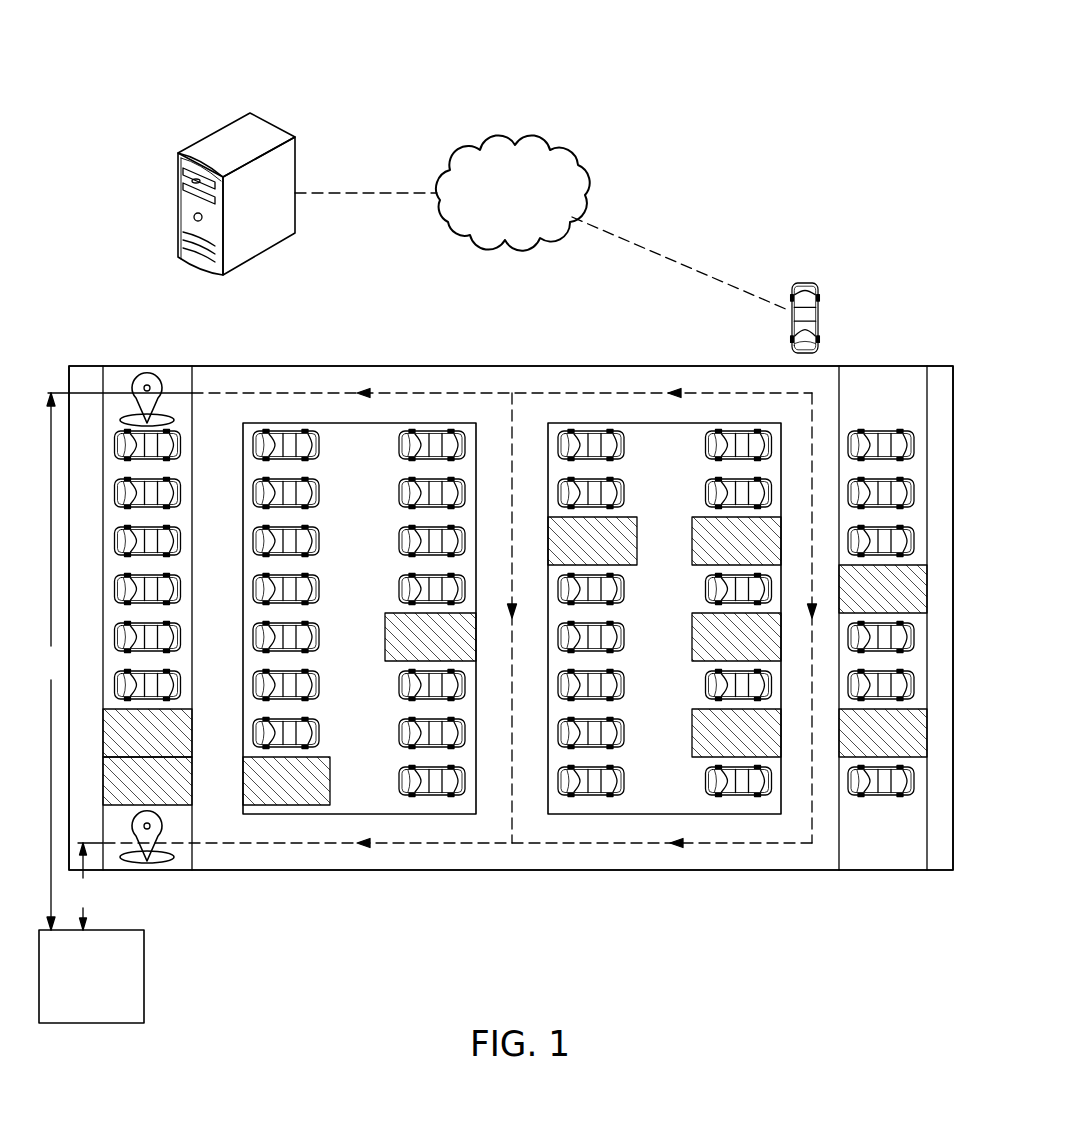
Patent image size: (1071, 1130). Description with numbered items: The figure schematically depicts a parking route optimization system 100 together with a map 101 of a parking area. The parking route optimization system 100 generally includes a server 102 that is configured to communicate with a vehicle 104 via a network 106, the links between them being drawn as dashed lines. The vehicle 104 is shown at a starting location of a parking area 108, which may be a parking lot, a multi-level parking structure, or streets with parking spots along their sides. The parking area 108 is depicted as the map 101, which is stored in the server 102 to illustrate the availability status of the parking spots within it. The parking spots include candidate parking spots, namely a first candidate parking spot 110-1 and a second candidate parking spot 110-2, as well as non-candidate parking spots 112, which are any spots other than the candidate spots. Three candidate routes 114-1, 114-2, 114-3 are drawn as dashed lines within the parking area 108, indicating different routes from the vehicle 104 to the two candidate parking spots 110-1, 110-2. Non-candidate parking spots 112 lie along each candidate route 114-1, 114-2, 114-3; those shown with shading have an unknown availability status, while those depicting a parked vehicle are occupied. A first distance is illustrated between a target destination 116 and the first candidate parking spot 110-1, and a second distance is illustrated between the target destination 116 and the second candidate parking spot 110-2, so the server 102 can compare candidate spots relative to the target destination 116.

The parking route optimization system 100 is at (136, 90).
The map 101 is at (431, 907).
The server 102 is at (268, 127).
The vehicle 104 is at (805, 283).
The network 106 is at (529, 142).
The parking area 108 is at (776, 907).
The first candidate parking spot 110-1 is at (147, 863).
The second candidate parking spot 110-2 is at (147, 373).
The non-candidate parking spots 112 is at (385, 628).
The first candidate route 114-1 is at (705, 843).
The second candidate route 114-2 is at (512, 408).
The third candidate route 114-3 is at (333, 393).
The target destination 116 is at (144, 976).